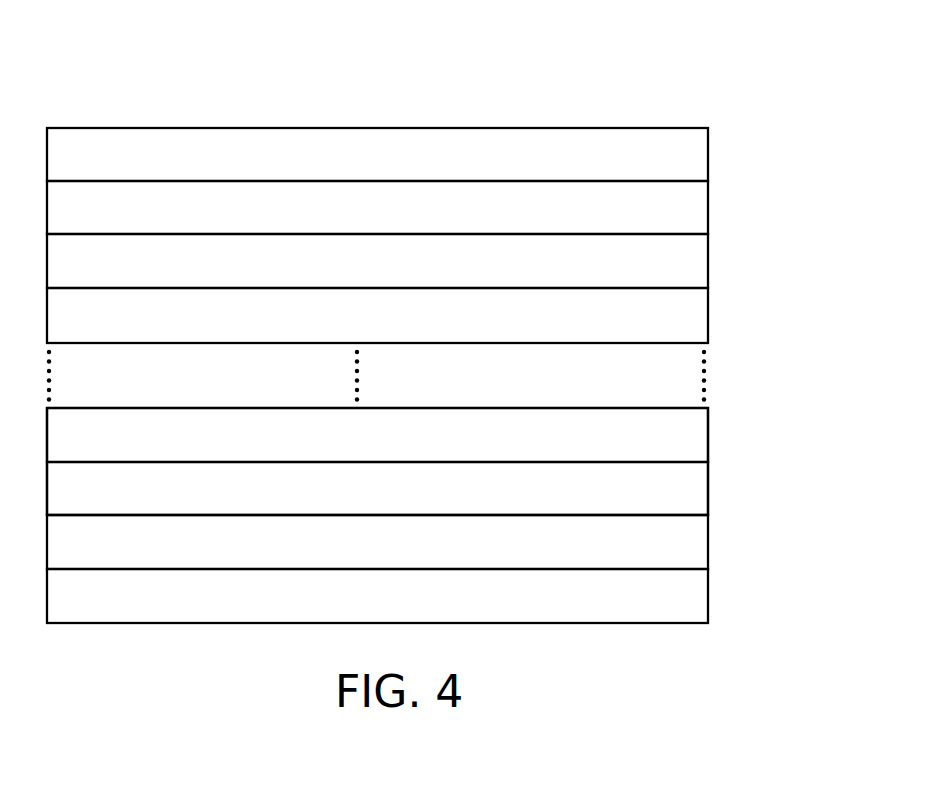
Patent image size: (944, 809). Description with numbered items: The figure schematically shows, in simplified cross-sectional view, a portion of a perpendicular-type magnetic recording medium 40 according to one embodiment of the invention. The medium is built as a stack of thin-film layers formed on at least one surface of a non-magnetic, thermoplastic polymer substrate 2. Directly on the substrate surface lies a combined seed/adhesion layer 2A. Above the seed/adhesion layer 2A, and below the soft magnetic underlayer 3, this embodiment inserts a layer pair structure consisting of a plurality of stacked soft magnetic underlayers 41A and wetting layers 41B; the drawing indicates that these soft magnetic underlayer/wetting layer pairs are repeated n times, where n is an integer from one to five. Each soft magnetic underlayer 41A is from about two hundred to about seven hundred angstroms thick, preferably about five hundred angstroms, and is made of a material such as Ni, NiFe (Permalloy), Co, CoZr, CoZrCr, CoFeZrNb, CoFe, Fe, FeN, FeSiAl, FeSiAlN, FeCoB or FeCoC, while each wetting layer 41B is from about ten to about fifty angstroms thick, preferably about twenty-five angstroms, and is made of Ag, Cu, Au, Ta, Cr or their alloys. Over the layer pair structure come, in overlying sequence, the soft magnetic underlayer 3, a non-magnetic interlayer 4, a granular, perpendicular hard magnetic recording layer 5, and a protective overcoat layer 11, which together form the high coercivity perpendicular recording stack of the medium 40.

The protective overcoat layer 11 is at (710, 156).
The granular, perpendicular hard magnetic recording layer 5 is at (710, 205).
The non-magnetic interlayer 4 is at (710, 260).
The soft magnetic underlayer 3 is at (710, 315).
The wetting layer 41B is at (710, 432).
The soft magnetic underlayer 41A is at (710, 489).
The perpendicular-type magnetic recording medium 40 is at (803, 416).
The combined seed/adhesion layer 2A is at (710, 541).
The non-magnetic, thermoplastic polymer substrate 2 is at (710, 595).